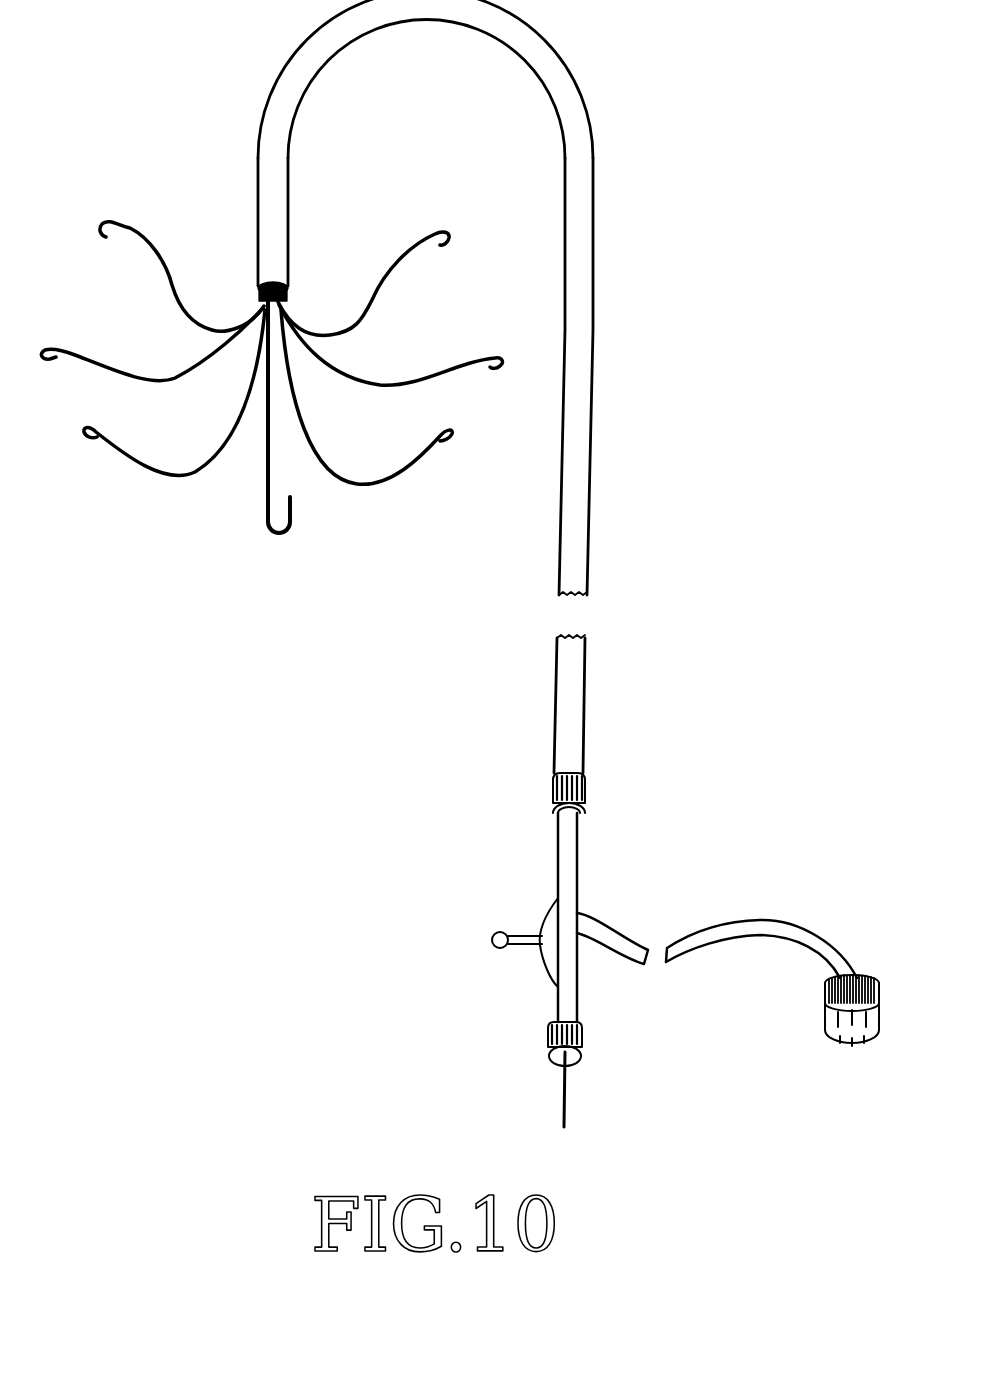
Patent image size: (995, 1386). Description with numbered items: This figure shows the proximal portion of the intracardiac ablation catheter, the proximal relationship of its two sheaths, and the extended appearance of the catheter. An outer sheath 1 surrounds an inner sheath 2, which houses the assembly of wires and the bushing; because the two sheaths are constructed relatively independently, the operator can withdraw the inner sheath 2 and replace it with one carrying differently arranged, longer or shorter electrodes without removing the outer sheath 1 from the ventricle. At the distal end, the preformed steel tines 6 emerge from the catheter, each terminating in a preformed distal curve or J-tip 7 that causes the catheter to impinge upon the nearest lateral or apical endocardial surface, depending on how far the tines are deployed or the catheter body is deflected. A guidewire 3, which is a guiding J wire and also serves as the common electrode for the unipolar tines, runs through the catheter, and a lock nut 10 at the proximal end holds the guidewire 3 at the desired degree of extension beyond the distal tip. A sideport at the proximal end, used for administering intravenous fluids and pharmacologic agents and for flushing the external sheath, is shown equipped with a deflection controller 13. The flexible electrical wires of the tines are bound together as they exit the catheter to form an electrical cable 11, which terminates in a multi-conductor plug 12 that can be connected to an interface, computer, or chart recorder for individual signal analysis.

The outer sheath 1 is at (593, 318).
The inner sheath 2 is at (578, 853).
The guidewire 3 is at (288, 525).
The preformed steel tines 6 is at (198, 482).
The distal tip of preformed steel tine 7 is at (447, 437).
The lock nut for guiding J-wire 10 is at (553, 1050).
The electrical cable 11 is at (810, 930).
The multi-conductor plug 12 is at (828, 1030).
The deflection controller 13 is at (523, 937).